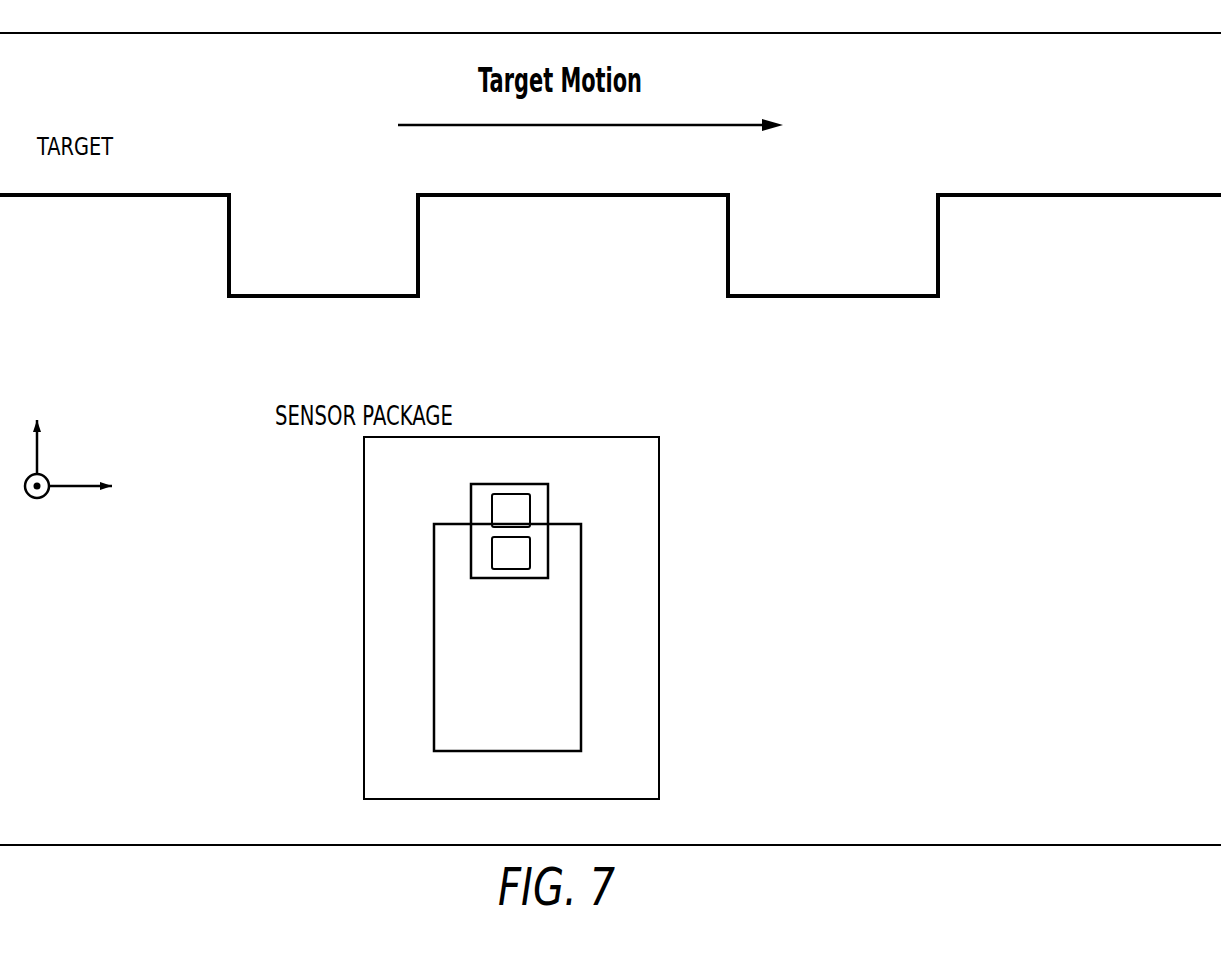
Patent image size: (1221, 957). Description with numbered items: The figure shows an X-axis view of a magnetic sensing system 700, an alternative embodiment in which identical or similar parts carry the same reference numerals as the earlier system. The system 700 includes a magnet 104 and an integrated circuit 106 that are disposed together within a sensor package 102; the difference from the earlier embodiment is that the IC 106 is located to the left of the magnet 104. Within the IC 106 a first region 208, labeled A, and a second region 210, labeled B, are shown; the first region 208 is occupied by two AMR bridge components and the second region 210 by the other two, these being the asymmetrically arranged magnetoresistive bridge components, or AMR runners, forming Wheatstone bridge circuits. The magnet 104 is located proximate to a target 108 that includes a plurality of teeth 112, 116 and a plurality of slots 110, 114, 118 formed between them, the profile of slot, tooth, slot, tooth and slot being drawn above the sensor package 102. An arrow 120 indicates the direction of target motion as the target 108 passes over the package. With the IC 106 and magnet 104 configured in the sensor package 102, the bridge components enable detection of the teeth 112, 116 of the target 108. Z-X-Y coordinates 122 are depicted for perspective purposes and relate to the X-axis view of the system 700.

The sensor package 102 is at (638, 720).
The magnet 104 is at (480, 694).
The integrated circuit 106 is at (514, 484).
The target 108 is at (1012, 152).
The slot 110 is at (108, 287).
The tooth 112 is at (296, 315).
The slot 114 is at (577, 282).
The tooth 116 is at (819, 313).
The slot 118 is at (1039, 283).
The target motion direction arrow 120 is at (678, 125).
The Z-X-Y coordinates 122 is at (75, 505).
The first region 208 is at (492, 504).
The second region 210 is at (492, 549).
The magnetic sensing system 700 is at (1150, 730).